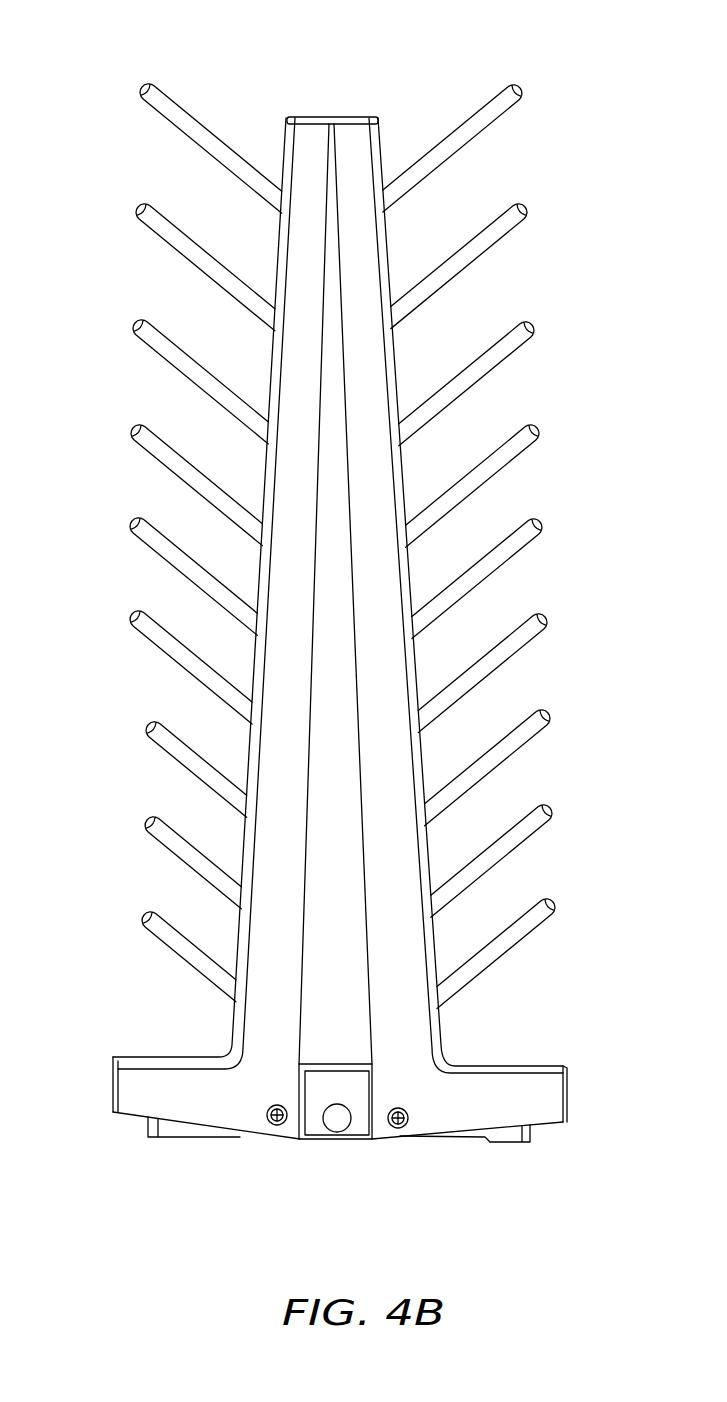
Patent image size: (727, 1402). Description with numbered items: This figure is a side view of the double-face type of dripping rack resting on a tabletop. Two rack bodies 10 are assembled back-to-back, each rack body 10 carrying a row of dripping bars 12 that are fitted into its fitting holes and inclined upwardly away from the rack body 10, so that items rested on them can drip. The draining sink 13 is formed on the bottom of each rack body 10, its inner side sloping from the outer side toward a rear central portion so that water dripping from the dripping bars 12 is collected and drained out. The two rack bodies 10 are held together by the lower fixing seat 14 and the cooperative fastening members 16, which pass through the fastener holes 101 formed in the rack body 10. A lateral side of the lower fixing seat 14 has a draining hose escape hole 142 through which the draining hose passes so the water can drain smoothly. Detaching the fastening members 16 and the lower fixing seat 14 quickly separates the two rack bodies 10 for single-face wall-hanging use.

The rack body 10 is at (328, 118).
The fastener holes 101 is at (309, 117).
The dripping bars 12 is at (498, 115).
The draining sink 13 is at (146, 1058).
The lower fixing seat 14 is at (313, 1128).
The draining hose escape hole 142 is at (345, 1128).
The fastening members 16 is at (312, 117).